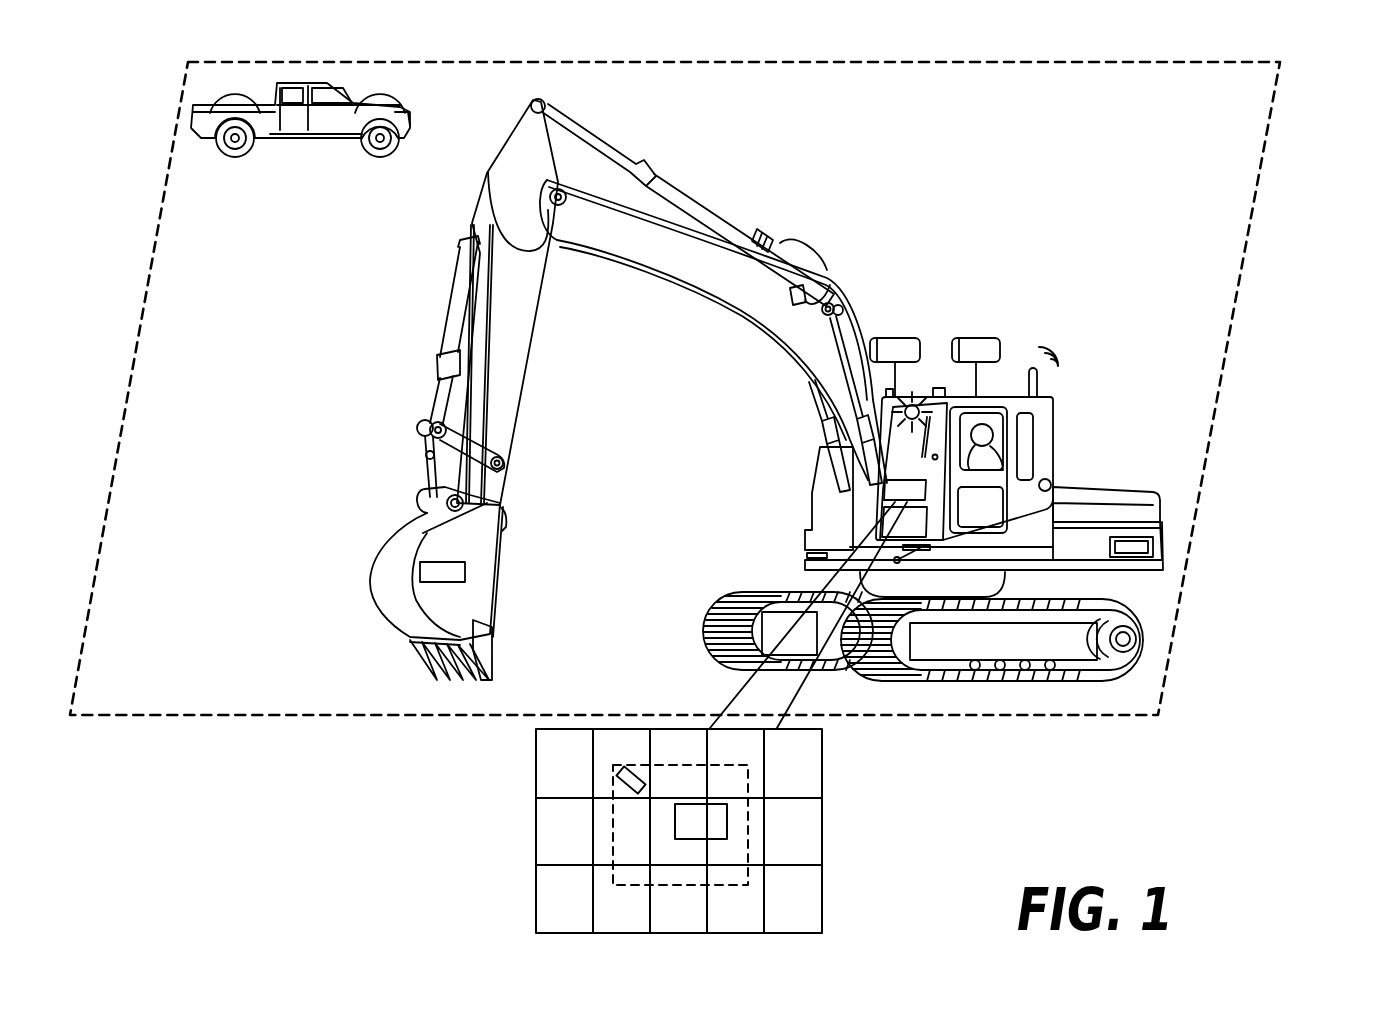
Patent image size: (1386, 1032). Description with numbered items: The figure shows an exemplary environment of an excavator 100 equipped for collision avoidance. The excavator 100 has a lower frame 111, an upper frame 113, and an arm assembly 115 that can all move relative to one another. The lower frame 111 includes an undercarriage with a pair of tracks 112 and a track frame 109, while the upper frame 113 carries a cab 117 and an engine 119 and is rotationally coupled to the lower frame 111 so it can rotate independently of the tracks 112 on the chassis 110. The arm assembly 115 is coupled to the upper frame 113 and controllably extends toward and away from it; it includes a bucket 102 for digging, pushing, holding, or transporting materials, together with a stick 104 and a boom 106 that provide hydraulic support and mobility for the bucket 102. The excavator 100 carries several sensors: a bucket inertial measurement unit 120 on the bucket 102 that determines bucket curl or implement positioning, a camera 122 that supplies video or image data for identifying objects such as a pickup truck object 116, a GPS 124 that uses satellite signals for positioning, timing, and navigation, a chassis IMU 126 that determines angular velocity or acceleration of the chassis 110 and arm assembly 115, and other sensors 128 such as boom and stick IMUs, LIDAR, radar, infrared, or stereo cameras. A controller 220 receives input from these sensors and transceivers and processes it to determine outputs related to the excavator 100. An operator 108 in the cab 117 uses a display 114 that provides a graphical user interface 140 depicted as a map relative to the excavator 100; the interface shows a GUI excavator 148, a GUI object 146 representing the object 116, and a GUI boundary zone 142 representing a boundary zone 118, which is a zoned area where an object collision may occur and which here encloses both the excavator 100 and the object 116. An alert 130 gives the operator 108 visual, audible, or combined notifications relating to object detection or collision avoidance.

The excavator 100 is at (623, 112).
The bucket 102 is at (364, 598).
The stick 104 is at (455, 292).
The boom 106 is at (717, 262).
The operator 108 is at (988, 470).
The track frame 109 is at (1027, 640).
The chassis 110 is at (1108, 517).
The lower frame 111 is at (915, 670).
The tracks 112 is at (730, 638).
The upper frame 113 is at (815, 445).
The display 114 is at (883, 493).
The arm assembly 115 is at (572, 258).
The object 116 is at (205, 155).
The cab 117 is at (975, 512).
The boundary zone 118 is at (1268, 153).
The engine 119 is at (1086, 532).
The bucket inertial measurement unit 120 is at (415, 573).
The camera 122 is at (895, 333).
The GPS 124 is at (1065, 355).
The chassis IMU 126 is at (1158, 548).
The other sensors 128 is at (983, 333).
The alert 130 is at (915, 398).
The graphical user interface 140 is at (701, 831).
The GUI boundary zone 142 is at (612, 881).
The GUI object 146 is at (622, 788).
The GUI excavator 148 is at (732, 823).
The controller 220 is at (1098, 500).